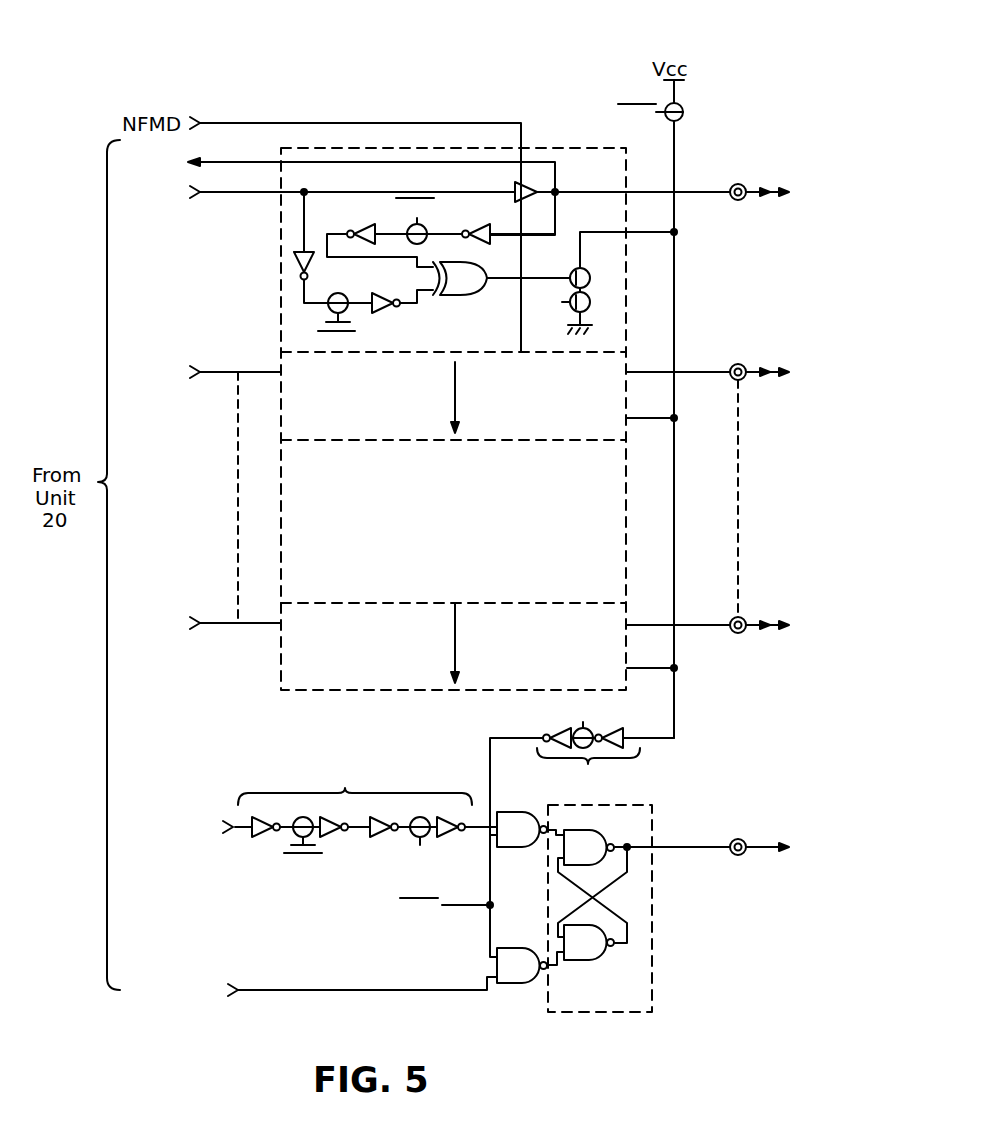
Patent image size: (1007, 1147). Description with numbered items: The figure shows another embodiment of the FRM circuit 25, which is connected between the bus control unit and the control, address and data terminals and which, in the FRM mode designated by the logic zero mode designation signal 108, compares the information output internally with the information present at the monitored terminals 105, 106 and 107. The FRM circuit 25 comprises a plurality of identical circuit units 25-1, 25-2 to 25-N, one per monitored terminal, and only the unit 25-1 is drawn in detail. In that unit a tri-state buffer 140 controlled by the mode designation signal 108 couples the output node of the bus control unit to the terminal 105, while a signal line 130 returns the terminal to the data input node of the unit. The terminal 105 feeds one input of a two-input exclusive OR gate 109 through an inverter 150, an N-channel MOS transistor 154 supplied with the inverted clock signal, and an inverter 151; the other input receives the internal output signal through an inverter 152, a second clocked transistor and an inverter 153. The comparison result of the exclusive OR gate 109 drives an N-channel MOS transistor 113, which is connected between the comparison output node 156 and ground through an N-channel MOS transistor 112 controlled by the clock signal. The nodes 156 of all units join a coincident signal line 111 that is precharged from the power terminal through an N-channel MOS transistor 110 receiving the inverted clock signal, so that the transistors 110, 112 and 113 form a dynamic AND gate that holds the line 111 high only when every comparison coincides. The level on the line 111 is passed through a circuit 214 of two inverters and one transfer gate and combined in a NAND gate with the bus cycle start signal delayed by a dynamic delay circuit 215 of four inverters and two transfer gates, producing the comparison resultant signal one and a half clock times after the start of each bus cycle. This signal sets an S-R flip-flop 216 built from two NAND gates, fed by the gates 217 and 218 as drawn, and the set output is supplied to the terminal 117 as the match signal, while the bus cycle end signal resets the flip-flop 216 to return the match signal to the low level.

The FRM circuit 25 is at (495, 80).
The circuit unit 25-1 is at (575, 155).
The circuit unit 25-2 is at (614, 368).
The circuit unit 25-N is at (614, 622).
The terminal 105 is at (740, 184).
The terminal 106 is at (742, 364).
The terminal 107 is at (742, 617).
The mode designation signal NFMD 108 is at (283, 122).
The exclusive OR gate 109 is at (468, 300).
The N-channel MOS transistor 110 is at (683, 110).
The coincident signal line 111 is at (675, 160).
The N-channel MOS transistor 112 is at (590, 306).
The N-channel MOS transistor 113 is at (588, 271).
The terminal 117 is at (745, 840).
The signal line 130 is at (340, 163).
The tri-state buffer 140 is at (513, 188).
The inverter 150 is at (478, 229).
The inverter 151 is at (352, 230).
The inverter 152 is at (312, 262).
The inverter 153 is at (386, 316).
The N-channel MOS transistor 154 is at (424, 243).
The comparison output node 156 is at (677, 232).
The circuit 214 is at (582, 827).
The dynamic delay circuit 215 is at (308, 817).
The S-R flip-flop 216 is at (652, 810).
The NAND gate 217 is at (528, 798).
The NAND gate 218 is at (515, 984).